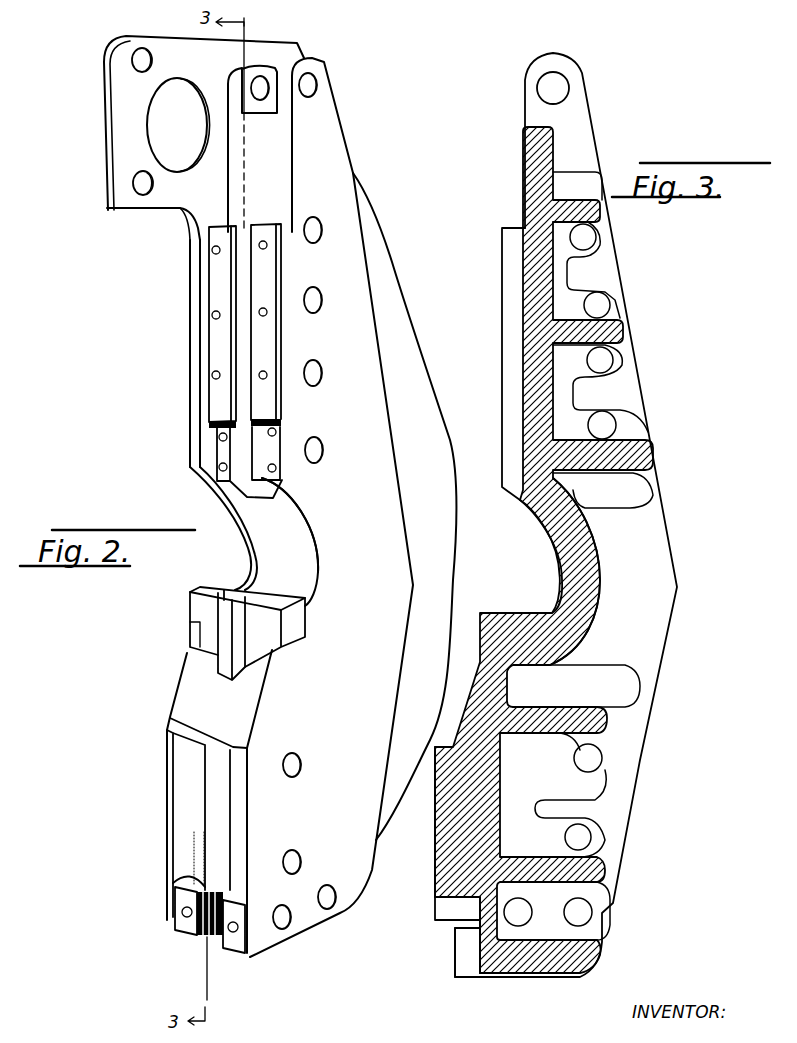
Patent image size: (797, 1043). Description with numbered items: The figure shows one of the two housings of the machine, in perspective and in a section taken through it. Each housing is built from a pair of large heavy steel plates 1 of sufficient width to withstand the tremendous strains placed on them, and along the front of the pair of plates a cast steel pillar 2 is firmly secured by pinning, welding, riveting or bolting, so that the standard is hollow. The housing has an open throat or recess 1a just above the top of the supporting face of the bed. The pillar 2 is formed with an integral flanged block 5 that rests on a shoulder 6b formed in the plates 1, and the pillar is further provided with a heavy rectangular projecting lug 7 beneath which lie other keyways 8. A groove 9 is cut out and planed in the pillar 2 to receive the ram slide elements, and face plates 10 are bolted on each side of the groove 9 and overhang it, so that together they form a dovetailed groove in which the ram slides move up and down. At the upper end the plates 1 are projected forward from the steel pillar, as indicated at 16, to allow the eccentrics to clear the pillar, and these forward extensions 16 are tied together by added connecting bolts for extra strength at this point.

In FIG. 2, the steel plates 1 is at (295, 565).
In FIG. 3, the steel plates 1 is at (556, 515).
In FIG. 2, the open throat 1a is at (306, 526).
In FIG. 3, the open throat 1a is at (527, 556).
In FIG. 2, the cast steel pillar 2 is at (271, 529).
In FIG. 3, the cast steel pillar 2 is at (626, 571).
In FIG. 2, the flanged block 5 is at (220, 627).
In FIG. 2, the shoulder 6b is at (271, 646).
In FIG. 2, the projecting lug 7 is at (196, 801).
In FIG. 3, the projecting lug 7 is at (439, 860).
In FIG. 2, the keyway 8 is at (188, 929).
In FIG. 3, the keyway 8 is at (444, 937).
In FIG. 2, the groove 9 is at (269, 449).
In FIG. 3, the groove 9 is at (490, 364).
In FIG. 2, the face plate 10 is at (231, 326).
In FIG. 2, the forward extension of plate 16 is at (189, 138).